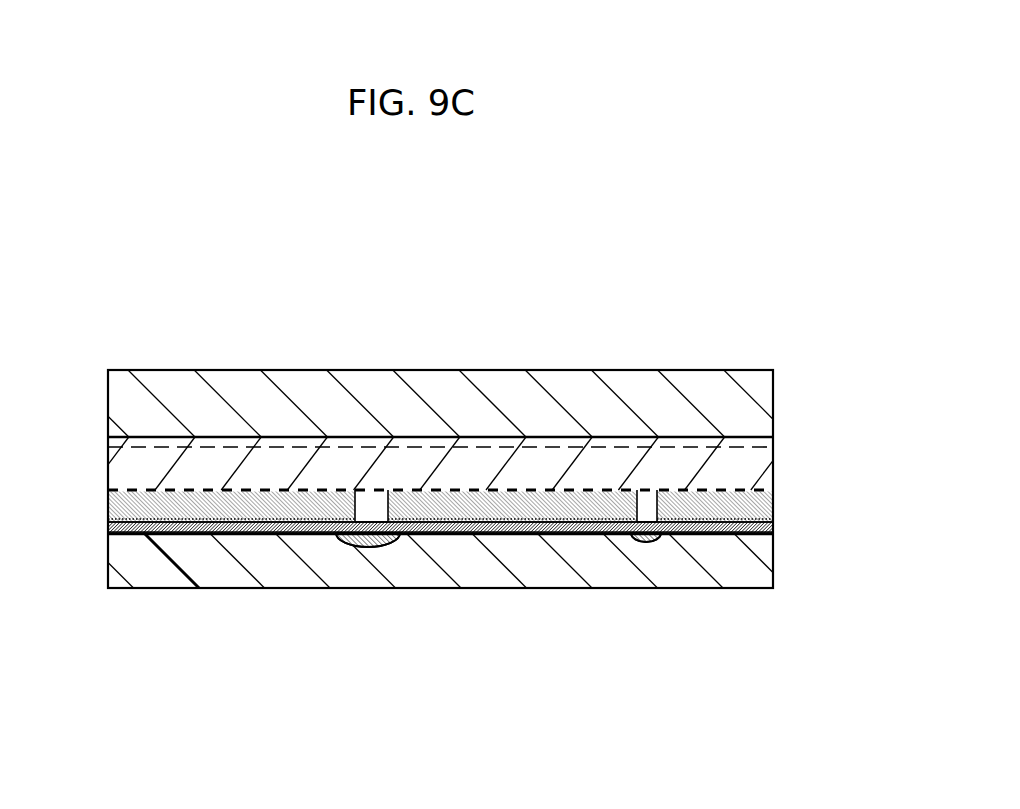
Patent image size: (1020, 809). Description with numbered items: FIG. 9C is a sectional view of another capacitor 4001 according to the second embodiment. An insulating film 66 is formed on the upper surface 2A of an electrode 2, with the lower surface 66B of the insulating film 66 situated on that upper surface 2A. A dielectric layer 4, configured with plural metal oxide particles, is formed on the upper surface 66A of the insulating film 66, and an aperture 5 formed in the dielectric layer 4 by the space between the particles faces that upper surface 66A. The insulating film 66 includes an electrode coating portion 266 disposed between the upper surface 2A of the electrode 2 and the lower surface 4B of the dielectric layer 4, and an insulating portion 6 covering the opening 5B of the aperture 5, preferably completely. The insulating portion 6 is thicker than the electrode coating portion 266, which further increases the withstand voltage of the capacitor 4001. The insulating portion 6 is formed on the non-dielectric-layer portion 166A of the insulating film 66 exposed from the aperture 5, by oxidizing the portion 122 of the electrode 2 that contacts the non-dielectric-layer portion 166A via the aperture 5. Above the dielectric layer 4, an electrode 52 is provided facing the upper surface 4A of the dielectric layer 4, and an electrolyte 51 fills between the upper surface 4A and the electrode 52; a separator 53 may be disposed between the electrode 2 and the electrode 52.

The capacitor 4001 is at (717, 288).
The electrode 52 is at (717, 395).
The separator 53 is at (743, 455).
The electrolyte 51 is at (121, 439).
The dielectric layer 4 is at (763, 510).
The upper surface of dielectric layer 4A is at (219, 491).
The lower surface of dielectric layer 4B is at (218, 531).
The aperture 5 is at (367, 503).
The non-dielectric-layer portion 166A is at (388, 520).
The opening 5B is at (346, 537).
The insulating film 66 is at (767, 533).
The upper surface of insulating film 66A is at (468, 490).
The lower surface of insulating film 66B is at (460, 534).
The electrode coating portion 266 is at (183, 534).
The electrode 2 is at (733, 562).
The upper surface of electrode 2A is at (145, 522).
The insulating portion 6 is at (373, 535).
The portion of electrode 122 is at (388, 550).